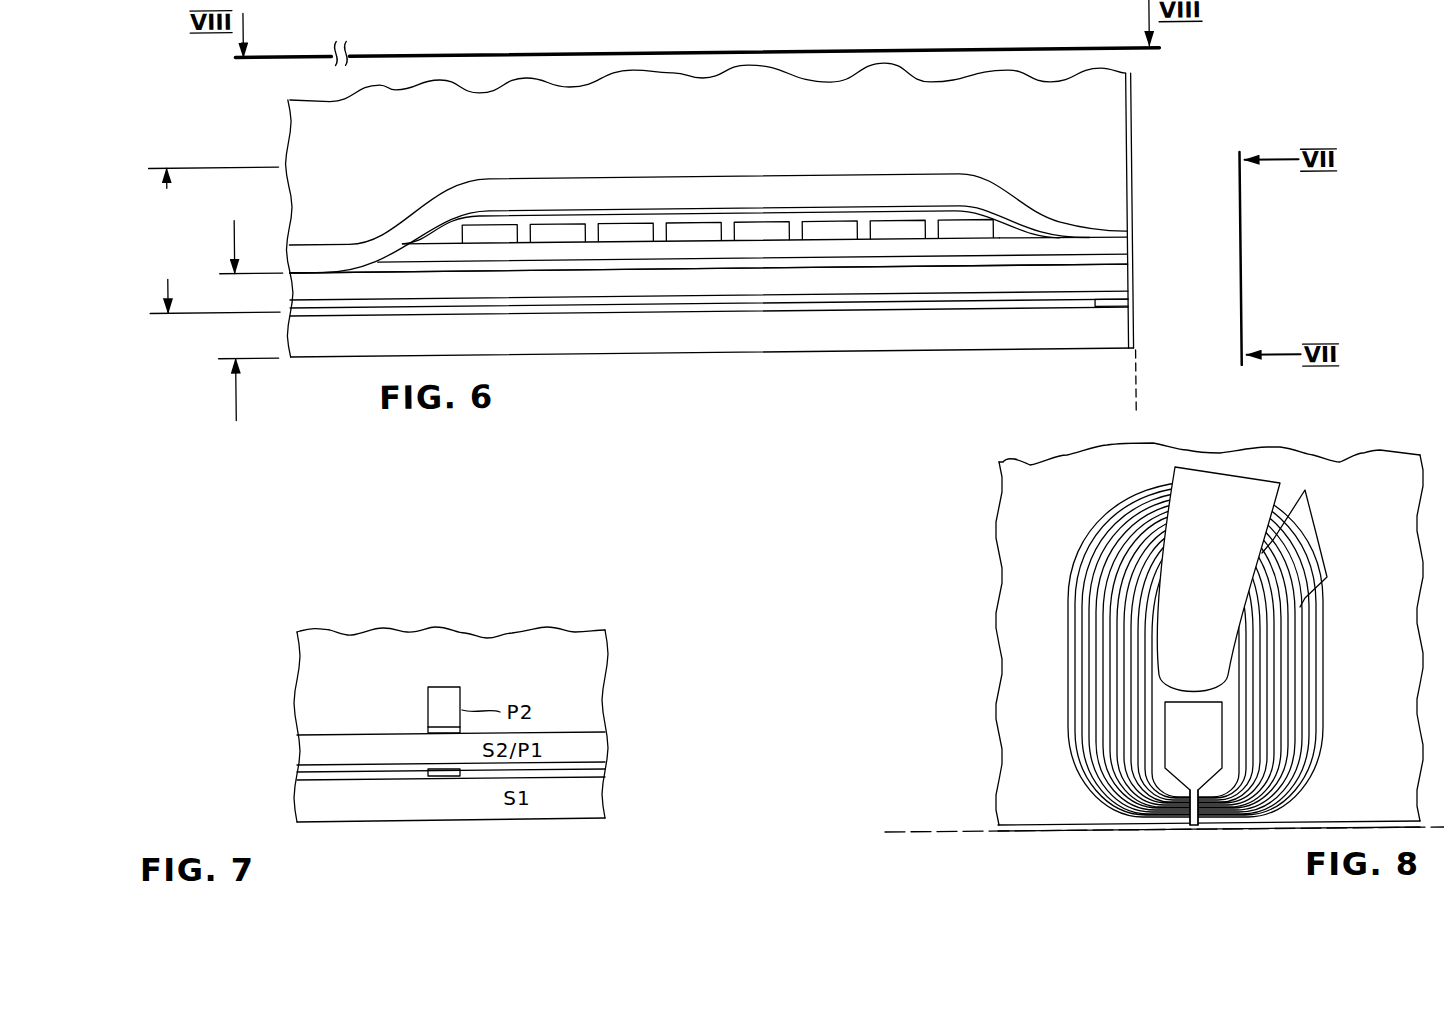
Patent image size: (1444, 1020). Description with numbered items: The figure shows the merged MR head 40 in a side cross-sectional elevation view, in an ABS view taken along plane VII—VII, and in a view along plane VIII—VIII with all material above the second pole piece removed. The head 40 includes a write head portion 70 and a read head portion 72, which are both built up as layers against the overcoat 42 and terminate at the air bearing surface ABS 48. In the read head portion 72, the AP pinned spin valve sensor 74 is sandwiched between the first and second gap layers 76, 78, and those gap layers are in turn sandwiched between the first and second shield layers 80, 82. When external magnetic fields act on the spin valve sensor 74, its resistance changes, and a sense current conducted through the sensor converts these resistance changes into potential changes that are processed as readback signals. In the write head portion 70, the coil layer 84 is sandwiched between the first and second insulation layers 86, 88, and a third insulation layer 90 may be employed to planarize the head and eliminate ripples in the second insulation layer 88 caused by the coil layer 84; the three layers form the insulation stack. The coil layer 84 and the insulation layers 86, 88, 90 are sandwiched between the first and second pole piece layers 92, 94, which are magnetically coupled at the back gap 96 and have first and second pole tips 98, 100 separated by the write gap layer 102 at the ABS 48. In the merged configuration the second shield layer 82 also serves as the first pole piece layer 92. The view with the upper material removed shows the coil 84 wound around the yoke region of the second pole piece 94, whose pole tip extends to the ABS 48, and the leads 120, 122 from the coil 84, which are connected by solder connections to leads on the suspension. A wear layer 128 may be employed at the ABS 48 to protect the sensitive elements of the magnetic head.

In FIG. 6, the merged MR head 40 is at (283, 106).
In FIG. 7, the merged MR head 40 is at (628, 642).
In FIG. 8, the merged MR head 40 is at (1337, 630).
In FIG. 6, the overcoat layer 42 is at (1110, 112).
In FIG. 7, the overcoat layer 42 is at (305, 657).
In FIG. 6, the air bearing surface (ABS) 48 is at (1185, 382).
In FIG. 8, the air bearing surface (ABS) 48 is at (940, 829).
In FIG. 6, the write head portion 70 is at (208, 240).
In FIG. 6, the read head portion 72 is at (243, 428).
In FIG. 6, the spin valve sensor 74 is at (1128, 312).
In FIG. 7, the spin valve sensor 74 is at (443, 777).
In FIG. 6, the first gap layer 76 is at (780, 318).
In FIG. 7, the first gap layer 76 is at (355, 781).
In FIG. 6, the second gap layer 78 is at (747, 302).
In FIG. 7, the second gap layer 78 is at (568, 770).
In FIG. 8, the second gap layer 78 is at (1205, 753).
In FIG. 6, the first shield layer 80 is at (862, 341).
In FIG. 7, the first shield layer 80 is at (598, 800).
In FIG. 6, the second shield layer 82 is at (709, 348).
In FIG. 7, the second shield layer 82 is at (384, 748).
In FIG. 6, the first pole piece layer 92 is at (968, 290).
In FIG. 7, the first pole piece layer 92 is at (300, 755).
In FIG. 6, the coil layer 84 is at (760, 235).
In FIG. 8, the coil layer 84 is at (1297, 723).
In FIG. 6, the first insulation layer 86 is at (633, 257).
In FIG. 8, the first insulation layer 86 is at (1192, 832).
In FIG. 6, the second insulation layer 88 is at (1008, 238).
In FIG. 6, the third insulation layer 90 is at (530, 213).
In FIG. 6, the second pole piece layer 94 is at (860, 193).
In FIG. 6, the back gap 96 is at (323, 243).
In FIG. 6, the first pole tip 98 is at (1128, 289).
In FIG. 6, the second pole tip 100 is at (1120, 246).
In FIG. 7, the second pole tip 100 is at (448, 690).
In FIG. 6, the write gap layer 102 is at (1128, 267).
In FIG. 7, the write gap layer 102 is at (445, 727).
In FIG. 8, the lead 120 is at (1222, 578).
In FIG. 8, the lead 122 is at (1316, 540).
In FIG. 6, the wear layer 128 is at (1135, 156).
In FIG. 8, the wear layer 128 is at (1015, 834).